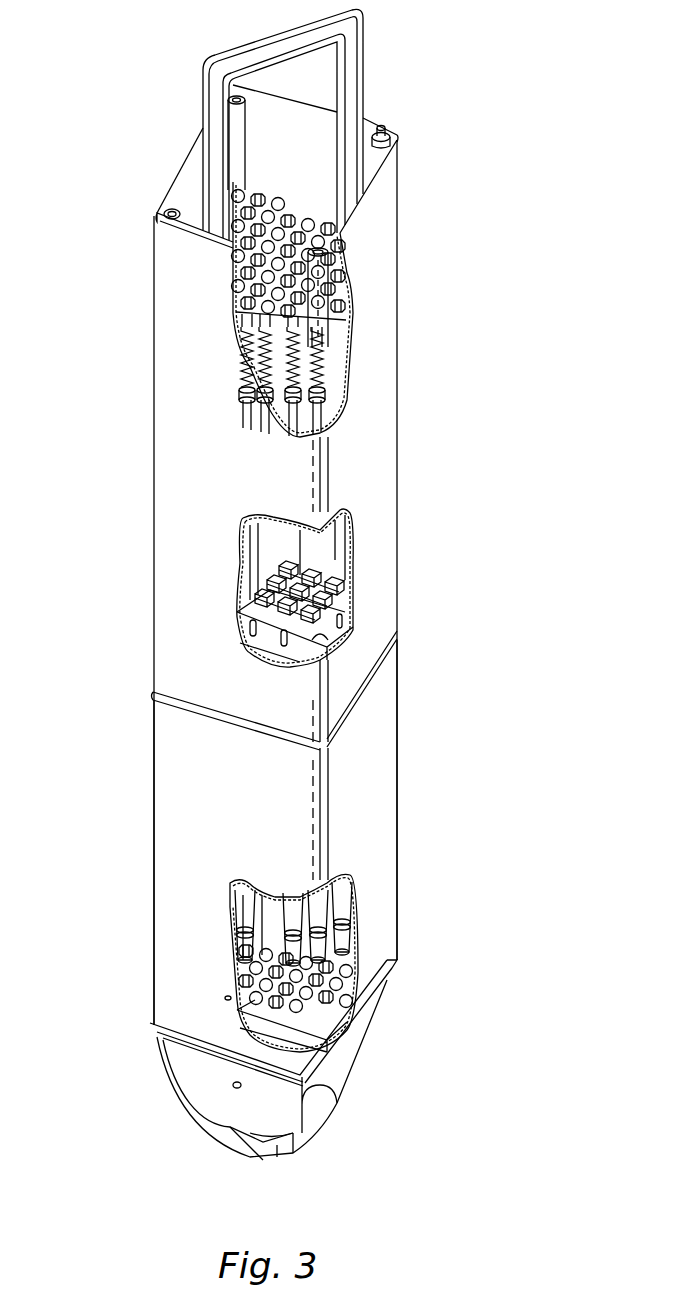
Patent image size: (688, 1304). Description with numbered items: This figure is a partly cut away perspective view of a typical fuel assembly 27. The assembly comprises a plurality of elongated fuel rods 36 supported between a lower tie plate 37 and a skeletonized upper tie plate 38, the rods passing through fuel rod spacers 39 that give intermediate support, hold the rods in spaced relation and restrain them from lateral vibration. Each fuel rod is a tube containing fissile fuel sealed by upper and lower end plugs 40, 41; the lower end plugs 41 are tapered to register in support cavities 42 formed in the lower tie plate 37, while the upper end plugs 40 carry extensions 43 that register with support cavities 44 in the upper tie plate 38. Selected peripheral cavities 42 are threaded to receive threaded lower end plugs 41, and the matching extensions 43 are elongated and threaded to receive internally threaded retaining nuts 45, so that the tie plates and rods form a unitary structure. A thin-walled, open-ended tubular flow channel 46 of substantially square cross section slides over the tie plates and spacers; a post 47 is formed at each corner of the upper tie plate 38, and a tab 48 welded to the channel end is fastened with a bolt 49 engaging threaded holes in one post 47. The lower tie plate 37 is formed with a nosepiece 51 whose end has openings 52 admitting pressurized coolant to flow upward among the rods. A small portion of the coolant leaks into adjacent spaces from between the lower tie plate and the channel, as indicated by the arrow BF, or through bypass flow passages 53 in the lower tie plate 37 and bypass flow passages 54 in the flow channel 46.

The fuel assembly 27 is at (485, 472).
The fuel rods 36 is at (340, 570).
The lower tie plate 37 is at (343, 1003).
The upper tie plate 38 is at (342, 298).
The fuel rod spacers 39 is at (353, 630).
The upper end plugs 40 is at (330, 398).
The lower end plugs 41 is at (350, 940).
The support cavities 42 is at (240, 969).
The extensions 43 is at (327, 373).
The support cavities 44 is at (233, 264).
The retaining nuts 45 is at (300, 316).
The flow channel 46 is at (397, 781).
The post 47 is at (163, 212).
The tab 48 is at (390, 133).
The bolt 49 is at (381, 126).
The nosepiece 51 is at (231, 1148).
The openings 52 is at (283, 1138).
The bypass flow passages 53 is at (233, 1087).
The bypass flow passages 54 is at (224, 999).
The bypass flow arrow BF is at (343, 1038).